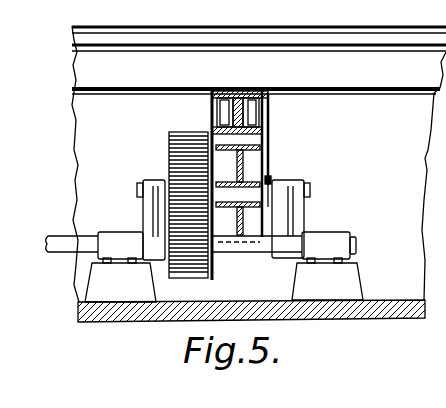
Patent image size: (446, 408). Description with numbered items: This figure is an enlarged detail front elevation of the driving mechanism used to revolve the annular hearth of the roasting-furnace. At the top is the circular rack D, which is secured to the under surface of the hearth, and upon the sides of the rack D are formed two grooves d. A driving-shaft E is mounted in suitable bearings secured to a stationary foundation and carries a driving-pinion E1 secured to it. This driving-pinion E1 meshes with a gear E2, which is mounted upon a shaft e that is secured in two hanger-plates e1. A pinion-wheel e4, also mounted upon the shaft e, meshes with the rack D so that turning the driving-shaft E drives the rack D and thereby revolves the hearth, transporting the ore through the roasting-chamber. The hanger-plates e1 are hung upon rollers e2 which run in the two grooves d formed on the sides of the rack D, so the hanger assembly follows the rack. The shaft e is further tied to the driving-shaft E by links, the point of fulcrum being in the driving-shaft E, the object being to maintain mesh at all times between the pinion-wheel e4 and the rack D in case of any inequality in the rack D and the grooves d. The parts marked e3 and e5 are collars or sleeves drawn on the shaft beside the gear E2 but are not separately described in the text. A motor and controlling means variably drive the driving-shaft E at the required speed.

The circular rack D is at (270, 112).
The groove d is at (212, 99).
The shaft e is at (269, 179).
The hanger-plate e1 is at (212, 117).
The roller e2 is at (212, 106).
The left collar / sleeve e3 is at (143, 209).
The pinion-wheel e4 is at (265, 151).
The right collar / sleeve e5 is at (306, 207).
The driving-shaft E is at (252, 253).
The driving-pinion E1 is at (192, 278).
The gear E2 is at (180, 132).